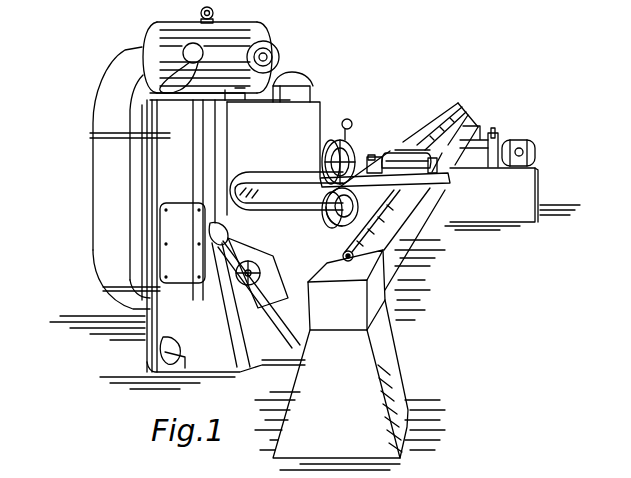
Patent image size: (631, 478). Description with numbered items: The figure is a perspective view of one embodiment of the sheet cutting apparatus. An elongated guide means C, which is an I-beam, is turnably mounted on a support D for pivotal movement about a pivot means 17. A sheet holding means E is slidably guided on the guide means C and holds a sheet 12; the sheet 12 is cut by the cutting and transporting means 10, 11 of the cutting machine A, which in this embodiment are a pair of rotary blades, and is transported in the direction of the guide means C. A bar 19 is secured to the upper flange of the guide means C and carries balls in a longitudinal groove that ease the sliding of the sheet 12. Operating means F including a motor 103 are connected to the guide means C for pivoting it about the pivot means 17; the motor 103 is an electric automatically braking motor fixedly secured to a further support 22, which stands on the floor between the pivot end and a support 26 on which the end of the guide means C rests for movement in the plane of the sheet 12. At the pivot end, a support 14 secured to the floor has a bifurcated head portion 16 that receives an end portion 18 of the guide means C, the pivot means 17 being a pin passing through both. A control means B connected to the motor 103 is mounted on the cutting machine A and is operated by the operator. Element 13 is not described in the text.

The cutting machine A is at (86, 203).
The motor 13 is at (232, 30).
The control means B is at (297, 71).
The sheet holding means E is at (393, 146).
The guide means C is at (407, 137).
The bar 19 is at (443, 120).
The support 26 is at (476, 126).
The motor 103 is at (520, 140).
The operating means F is at (541, 161).
The cutting and transporting means 10 is at (352, 158).
The sheet 12 is at (449, 181).
The cutting and transporting means 11 is at (326, 215).
The support 22 is at (489, 210).
The pivot means 17 is at (342, 257).
The end portion 18 is at (392, 270).
The head portion 16 is at (322, 306).
The support D is at (382, 337).
The support 14 is at (305, 392).